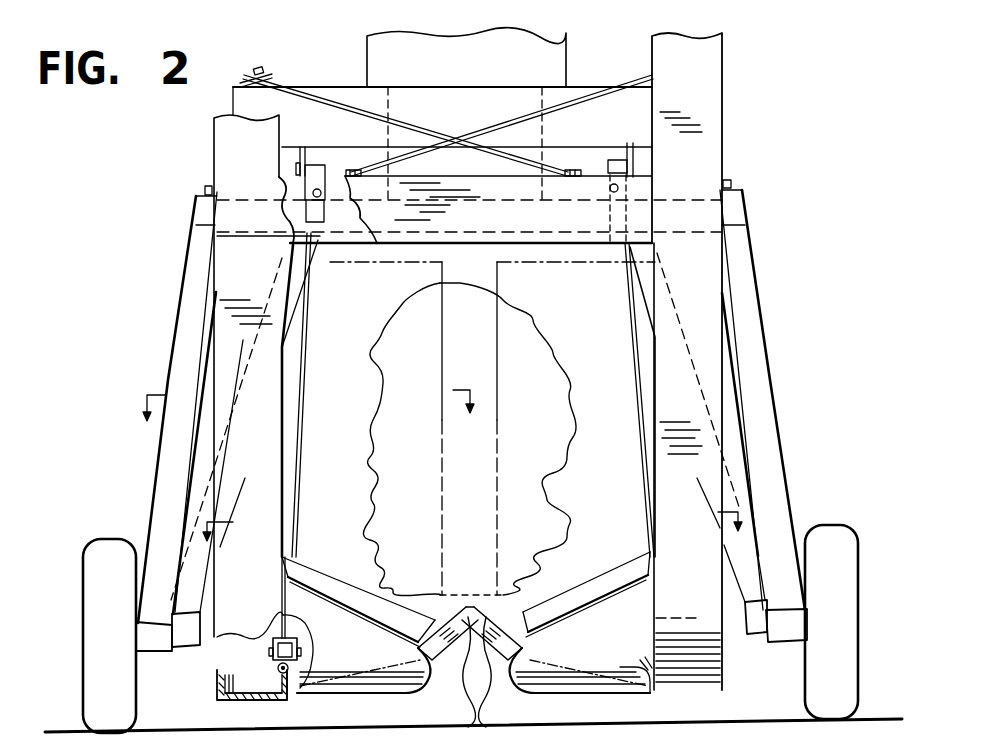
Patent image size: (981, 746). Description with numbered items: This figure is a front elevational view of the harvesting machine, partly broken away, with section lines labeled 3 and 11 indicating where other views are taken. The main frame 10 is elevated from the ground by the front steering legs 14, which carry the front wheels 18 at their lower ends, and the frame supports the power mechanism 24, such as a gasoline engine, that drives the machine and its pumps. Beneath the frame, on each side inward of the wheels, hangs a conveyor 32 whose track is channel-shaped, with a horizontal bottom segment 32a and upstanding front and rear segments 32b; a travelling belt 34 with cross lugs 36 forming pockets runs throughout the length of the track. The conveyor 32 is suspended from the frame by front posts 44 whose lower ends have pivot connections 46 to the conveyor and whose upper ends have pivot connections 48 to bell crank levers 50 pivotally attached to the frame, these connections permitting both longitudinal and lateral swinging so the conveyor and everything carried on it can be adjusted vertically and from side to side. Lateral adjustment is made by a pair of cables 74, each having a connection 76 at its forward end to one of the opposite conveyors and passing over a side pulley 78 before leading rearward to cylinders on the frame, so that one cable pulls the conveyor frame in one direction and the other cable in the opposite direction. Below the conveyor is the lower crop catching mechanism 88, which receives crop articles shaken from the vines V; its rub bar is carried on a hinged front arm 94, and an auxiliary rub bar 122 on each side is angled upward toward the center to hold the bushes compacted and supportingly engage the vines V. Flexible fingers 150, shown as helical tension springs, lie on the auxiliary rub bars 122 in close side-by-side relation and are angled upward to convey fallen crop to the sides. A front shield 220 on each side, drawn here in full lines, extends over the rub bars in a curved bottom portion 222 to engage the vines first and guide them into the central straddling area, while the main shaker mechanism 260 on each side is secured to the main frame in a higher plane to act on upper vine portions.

The main frame 10 is at (353, 90).
The front steering legs 14 is at (186, 348).
The front wheels 18 is at (96, 594).
The power mechanism 24 is at (553, 48).
The conveyor 32 is at (218, 671).
The horizontal bottom segment 32a is at (218, 690).
The upstanding front and rear segments 32b is at (230, 152).
The travelling belt 34 is at (236, 683).
The cross lugs 36 is at (258, 688).
The front posts 44 is at (311, 323).
The pivot connections 46 is at (272, 648).
The pivot connections 48 is at (313, 180).
The bell crank levers 50 is at (300, 160).
The cables 74 is at (488, 136).
The connections 76 is at (355, 173).
The side pulleys 78 is at (247, 72).
The crop catching or collector mechanism 88 is at (439, 657).
The front arm 94 is at (298, 694).
The auxiliary rub bar 122 is at (495, 653).
The flexible fingers 150 is at (463, 609).
The front shield 220 is at (410, 677).
The curved bottom portion 222 is at (350, 680).
The main shaker mechanism 260 is at (495, 364).
The vines V is at (545, 335).
The section line 3 is at (472, 512).
The section line 11 is at (311, 405).